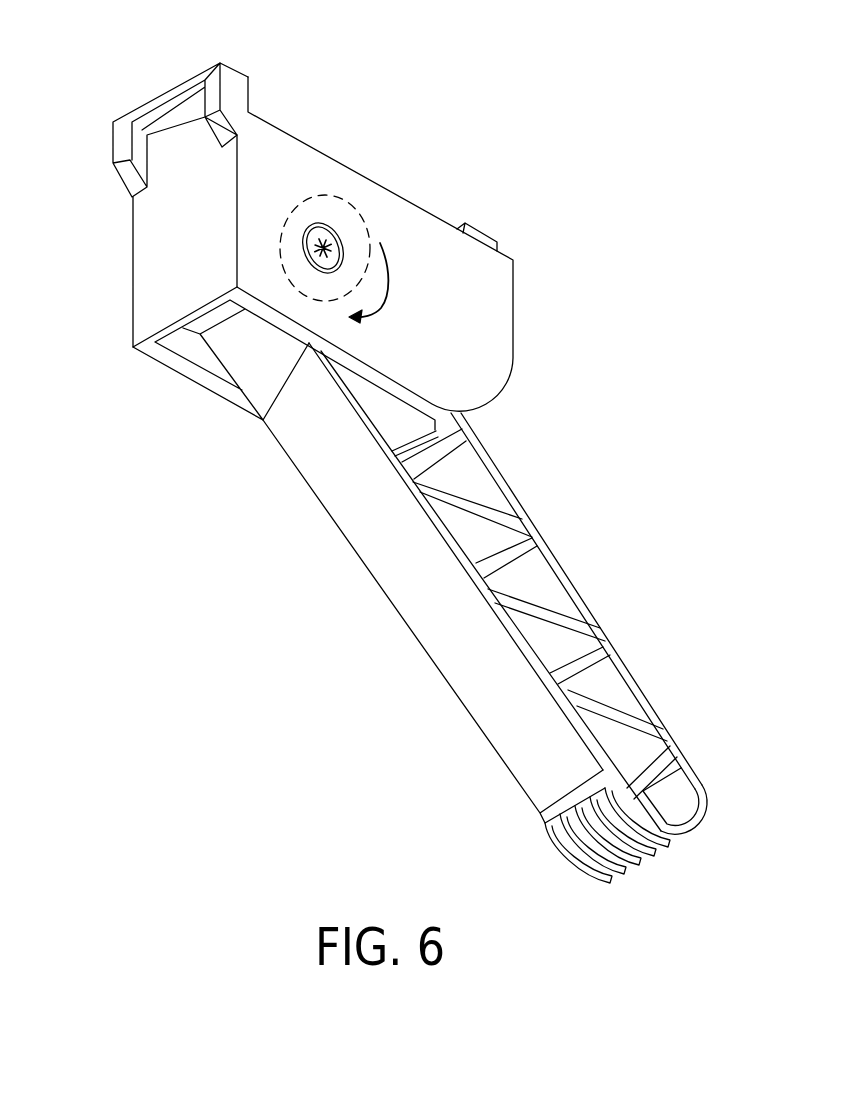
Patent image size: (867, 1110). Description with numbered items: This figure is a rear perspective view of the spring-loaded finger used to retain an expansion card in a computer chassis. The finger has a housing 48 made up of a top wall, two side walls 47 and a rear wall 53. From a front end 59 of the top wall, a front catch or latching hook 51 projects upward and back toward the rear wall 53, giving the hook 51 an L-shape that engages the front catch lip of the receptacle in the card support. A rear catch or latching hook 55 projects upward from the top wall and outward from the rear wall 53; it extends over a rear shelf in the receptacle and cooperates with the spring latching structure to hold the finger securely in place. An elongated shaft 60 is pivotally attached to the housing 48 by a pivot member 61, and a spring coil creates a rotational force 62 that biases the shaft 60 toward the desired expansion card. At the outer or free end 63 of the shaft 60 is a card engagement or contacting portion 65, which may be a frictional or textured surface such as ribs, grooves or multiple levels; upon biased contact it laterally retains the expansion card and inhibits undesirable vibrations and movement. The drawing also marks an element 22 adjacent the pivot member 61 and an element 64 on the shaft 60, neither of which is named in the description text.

The pivot axis 22 is at (362, 232).
The side walls 47 is at (219, 386).
The finger housing 48 is at (468, 327).
The front catch or latching hook 51 is at (480, 227).
The rear wall 53 is at (167, 255).
The rear catch or latching hook 55 is at (210, 64).
The front end 59 is at (595, 223).
The elongated shaft 60 is at (383, 648).
The pivot member 61 is at (321, 222).
The rotational force 62 is at (389, 291).
The outer end or free end 63 is at (708, 808).
The arm face 64 is at (510, 708).
The card engagement or contacting portion 65 is at (680, 867).